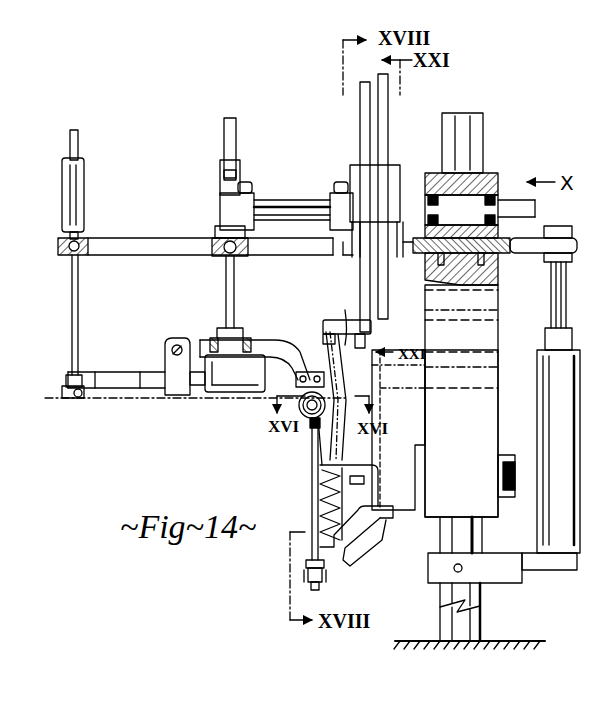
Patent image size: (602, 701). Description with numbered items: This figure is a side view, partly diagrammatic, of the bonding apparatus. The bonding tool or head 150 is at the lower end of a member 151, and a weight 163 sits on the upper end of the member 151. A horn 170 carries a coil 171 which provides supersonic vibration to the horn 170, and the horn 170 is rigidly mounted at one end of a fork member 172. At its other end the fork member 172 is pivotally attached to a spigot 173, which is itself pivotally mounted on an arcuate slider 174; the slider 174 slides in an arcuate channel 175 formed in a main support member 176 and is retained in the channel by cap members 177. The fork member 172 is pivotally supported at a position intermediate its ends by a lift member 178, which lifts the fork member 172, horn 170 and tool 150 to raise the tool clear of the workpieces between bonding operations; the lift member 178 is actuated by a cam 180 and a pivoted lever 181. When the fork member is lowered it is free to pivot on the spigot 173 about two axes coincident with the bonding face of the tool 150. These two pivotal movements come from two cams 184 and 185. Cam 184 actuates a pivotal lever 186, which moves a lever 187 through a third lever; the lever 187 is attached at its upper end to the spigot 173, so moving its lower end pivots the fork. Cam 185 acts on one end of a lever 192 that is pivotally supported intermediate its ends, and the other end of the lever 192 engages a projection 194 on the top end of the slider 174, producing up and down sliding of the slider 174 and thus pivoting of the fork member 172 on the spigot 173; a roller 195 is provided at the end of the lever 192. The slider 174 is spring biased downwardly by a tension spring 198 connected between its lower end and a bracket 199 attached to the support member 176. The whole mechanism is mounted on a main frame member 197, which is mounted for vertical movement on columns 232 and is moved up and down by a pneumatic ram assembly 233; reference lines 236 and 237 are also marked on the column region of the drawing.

The bonding tool 150 is at (80, 400).
The member 151 is at (78, 300).
The weight 163 is at (83, 192).
The horn 170 is at (125, 372).
The coil 171 is at (238, 388).
The fork member 172 is at (268, 340).
The spigot 173 is at (305, 417).
The arcuate slider 174 is at (326, 338).
The arcuate channel 175 is at (385, 400).
The main support member 176 is at (380, 418).
The cap members 177 is at (322, 462).
The lift member 178 is at (226, 288).
The cam 180 is at (236, 128).
The pivoted lever 181 is at (224, 181).
The cam 184 is at (388, 92).
The cam 185 is at (360, 103).
The pivotal lever 186 is at (382, 368).
The lever 187 is at (310, 506).
The lever 192 is at (350, 312).
The projection 194 is at (322, 324).
The roller 195 is at (372, 365).
The main frame member 197 is at (468, 482).
The tension spring 198 is at (312, 498).
The bracket 199 is at (340, 548).
The columns 232 is at (483, 140).
The pneumatic ram assembly 233 is at (553, 545).
The plane 236 is at (498, 333).
The plane 237 is at (498, 290).